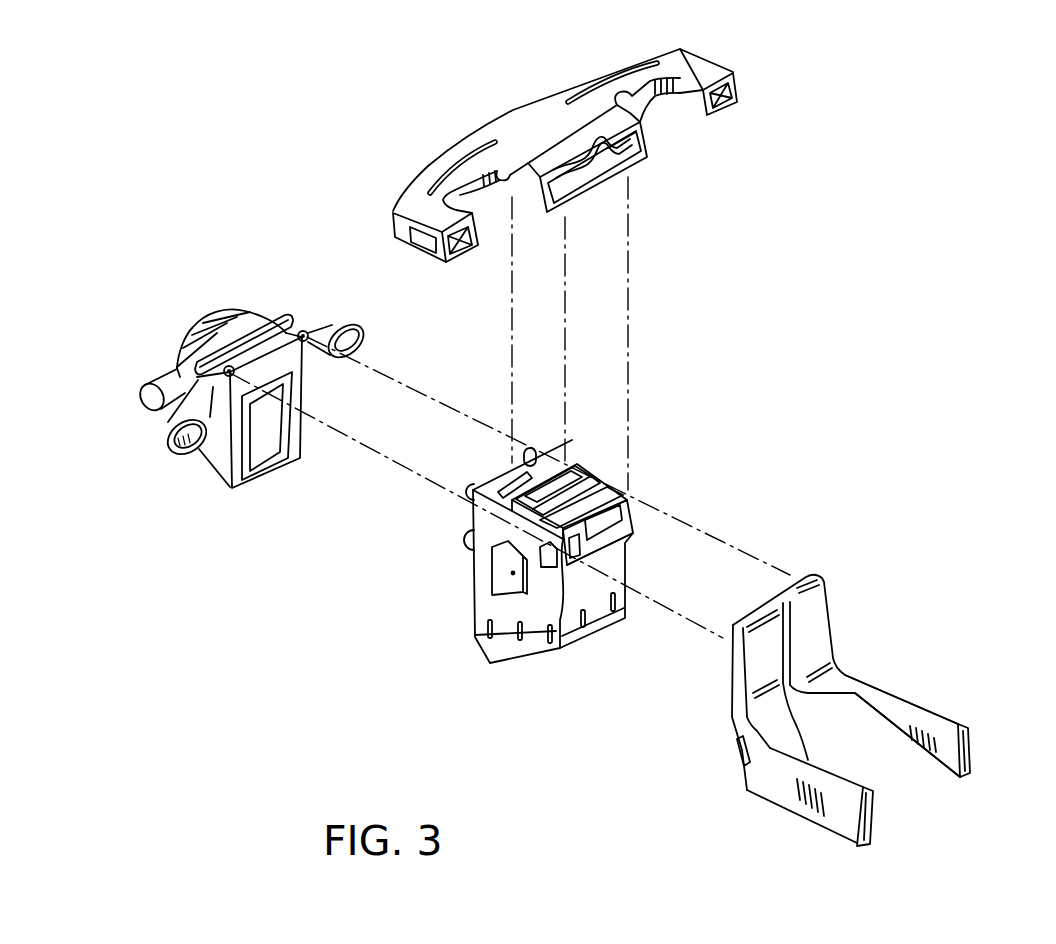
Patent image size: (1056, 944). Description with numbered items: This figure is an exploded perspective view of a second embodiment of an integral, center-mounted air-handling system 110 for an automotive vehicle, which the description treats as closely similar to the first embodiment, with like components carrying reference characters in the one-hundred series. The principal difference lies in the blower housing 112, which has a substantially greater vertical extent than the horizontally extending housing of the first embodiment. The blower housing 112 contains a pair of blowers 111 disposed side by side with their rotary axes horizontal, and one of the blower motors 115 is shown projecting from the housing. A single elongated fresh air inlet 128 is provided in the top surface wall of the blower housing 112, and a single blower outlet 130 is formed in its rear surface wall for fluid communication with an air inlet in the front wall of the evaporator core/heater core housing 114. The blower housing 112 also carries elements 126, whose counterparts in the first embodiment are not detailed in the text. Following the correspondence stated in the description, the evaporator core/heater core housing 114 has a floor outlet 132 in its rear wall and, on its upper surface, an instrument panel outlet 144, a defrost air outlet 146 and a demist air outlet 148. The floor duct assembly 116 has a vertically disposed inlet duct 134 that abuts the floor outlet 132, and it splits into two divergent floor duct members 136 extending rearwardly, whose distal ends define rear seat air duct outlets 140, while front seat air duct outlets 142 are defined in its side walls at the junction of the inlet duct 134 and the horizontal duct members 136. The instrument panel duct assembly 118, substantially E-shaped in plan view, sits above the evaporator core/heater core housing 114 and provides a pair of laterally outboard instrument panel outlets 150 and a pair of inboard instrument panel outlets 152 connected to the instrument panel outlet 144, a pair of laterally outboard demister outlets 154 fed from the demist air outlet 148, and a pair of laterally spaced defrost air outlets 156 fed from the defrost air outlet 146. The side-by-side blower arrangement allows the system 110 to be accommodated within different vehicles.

The integral, center-mounted air-handling system 110 is at (757, 322).
The blowers 111 is at (227, 313).
The blower housing 112 is at (237, 488).
The evaporator core/heater core housing 114 is at (578, 633).
The blower motor 115 is at (157, 380).
The floor duct assembly 116 is at (820, 617).
The instrument panel duct assembly 118 is at (542, 113).
The tubular ports 126 is at (182, 457).
The elongated fresh air inlet 128 is at (253, 330).
The blower outlet 130 is at (268, 457).
The floor outlet 132 is at (614, 525).
The inlet duct 134 is at (808, 577).
The floor duct members 136 is at (917, 730).
The rear seat air duct outlets 140 is at (970, 763).
The front seat air duct outlets 142 is at (738, 763).
The instrument panel outlet 144 is at (612, 492).
The defrost air outlet 146 is at (593, 468).
The demist air outlet 148 is at (550, 460).
The laterally outboard instrument panel outlets 150 is at (458, 240).
The inboard instrument panel outlets 152 is at (627, 155).
The laterally outboard demister outlets 154 is at (423, 240).
The defrost air outlets 156 is at (462, 152).